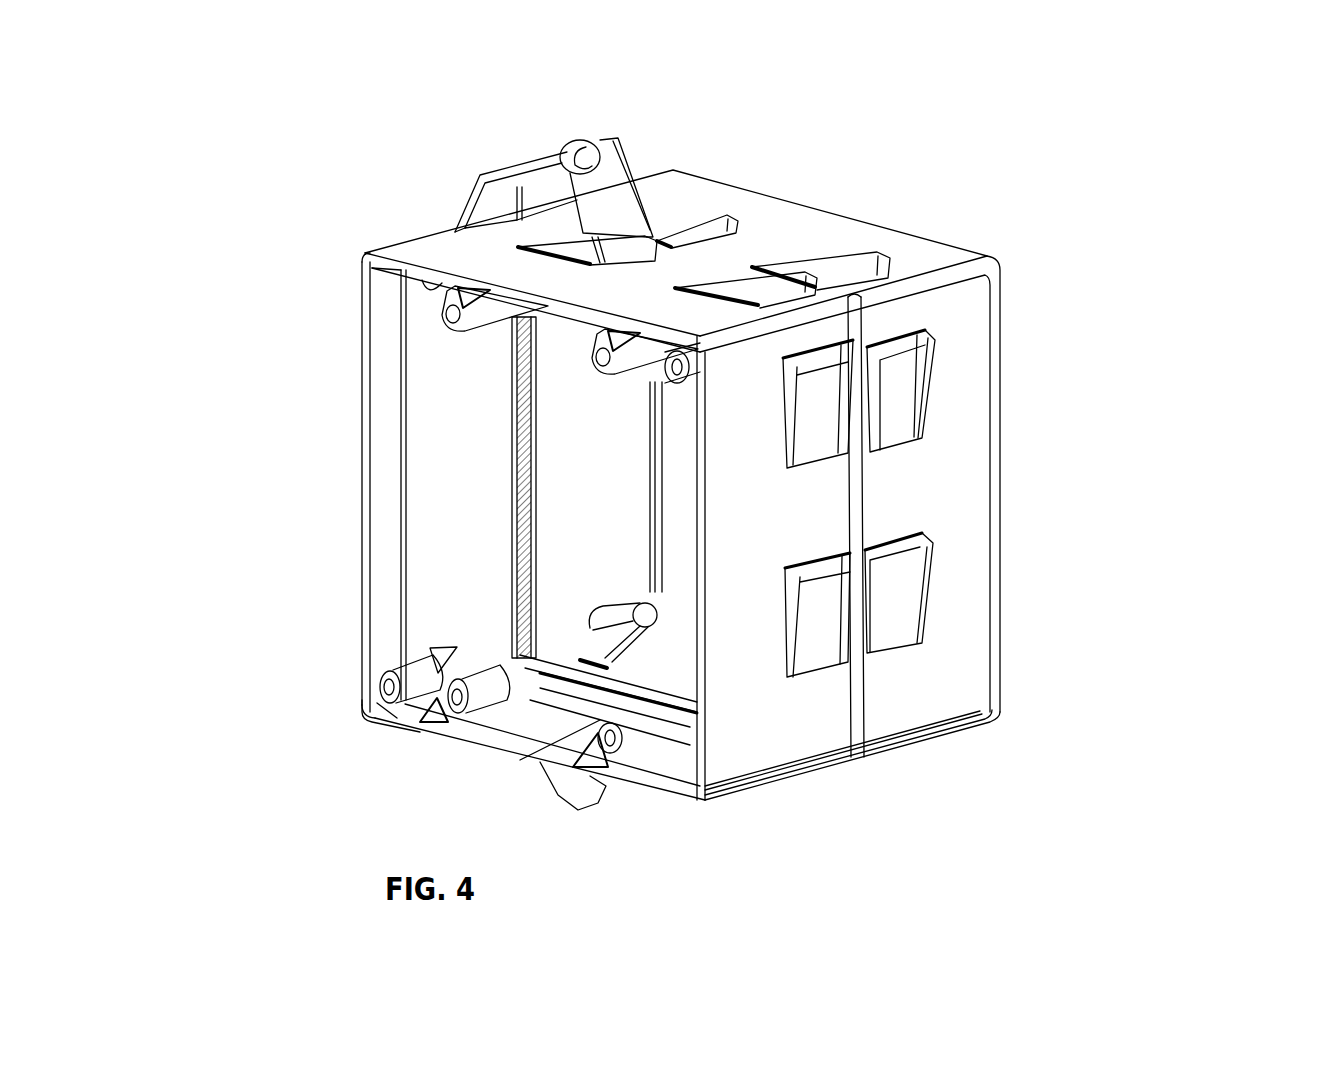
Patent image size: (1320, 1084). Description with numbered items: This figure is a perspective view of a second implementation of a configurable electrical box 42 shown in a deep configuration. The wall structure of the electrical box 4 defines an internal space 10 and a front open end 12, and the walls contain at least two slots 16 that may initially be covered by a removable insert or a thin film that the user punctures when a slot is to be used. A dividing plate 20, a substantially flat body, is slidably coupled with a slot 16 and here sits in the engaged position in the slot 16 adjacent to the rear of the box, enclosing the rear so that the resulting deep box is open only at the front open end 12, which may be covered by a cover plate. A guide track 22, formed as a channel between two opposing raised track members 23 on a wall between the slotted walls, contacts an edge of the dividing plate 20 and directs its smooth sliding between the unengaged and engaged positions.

The electrical box 4 is at (692, 157).
The internal space 10 is at (483, 620).
The front open end 12 is at (445, 558).
The slot 16 is at (855, 712).
The dividing plate 20 is at (995, 338).
The guide track 22 is at (692, 571).
The raised track members 23 is at (510, 467).
The configurable electrical box 42 is at (277, 832).